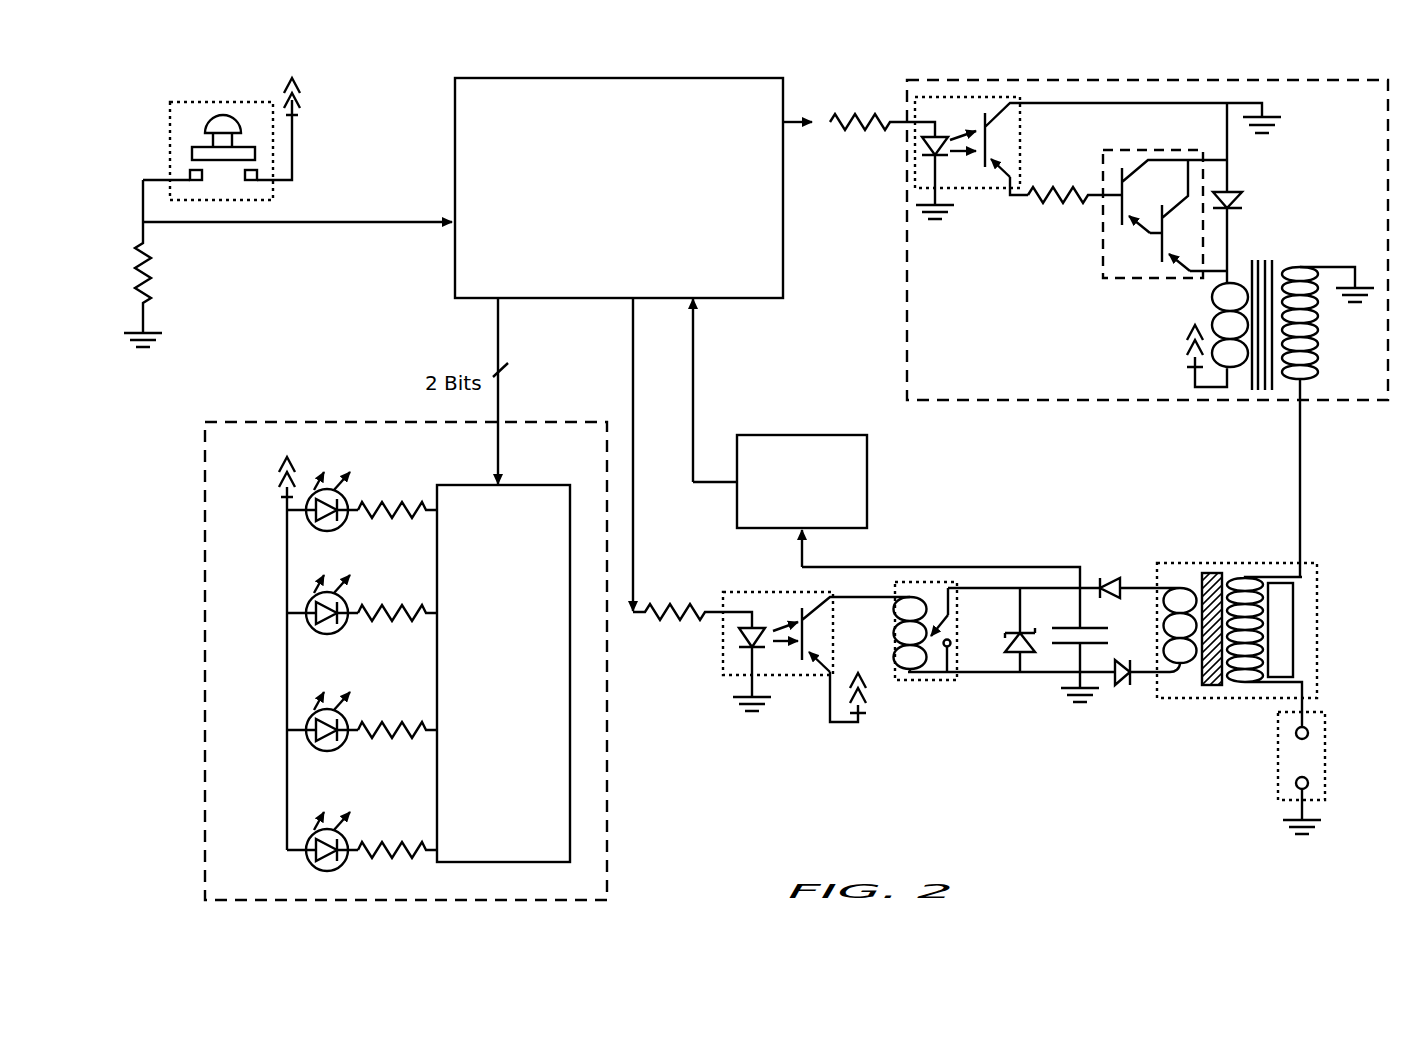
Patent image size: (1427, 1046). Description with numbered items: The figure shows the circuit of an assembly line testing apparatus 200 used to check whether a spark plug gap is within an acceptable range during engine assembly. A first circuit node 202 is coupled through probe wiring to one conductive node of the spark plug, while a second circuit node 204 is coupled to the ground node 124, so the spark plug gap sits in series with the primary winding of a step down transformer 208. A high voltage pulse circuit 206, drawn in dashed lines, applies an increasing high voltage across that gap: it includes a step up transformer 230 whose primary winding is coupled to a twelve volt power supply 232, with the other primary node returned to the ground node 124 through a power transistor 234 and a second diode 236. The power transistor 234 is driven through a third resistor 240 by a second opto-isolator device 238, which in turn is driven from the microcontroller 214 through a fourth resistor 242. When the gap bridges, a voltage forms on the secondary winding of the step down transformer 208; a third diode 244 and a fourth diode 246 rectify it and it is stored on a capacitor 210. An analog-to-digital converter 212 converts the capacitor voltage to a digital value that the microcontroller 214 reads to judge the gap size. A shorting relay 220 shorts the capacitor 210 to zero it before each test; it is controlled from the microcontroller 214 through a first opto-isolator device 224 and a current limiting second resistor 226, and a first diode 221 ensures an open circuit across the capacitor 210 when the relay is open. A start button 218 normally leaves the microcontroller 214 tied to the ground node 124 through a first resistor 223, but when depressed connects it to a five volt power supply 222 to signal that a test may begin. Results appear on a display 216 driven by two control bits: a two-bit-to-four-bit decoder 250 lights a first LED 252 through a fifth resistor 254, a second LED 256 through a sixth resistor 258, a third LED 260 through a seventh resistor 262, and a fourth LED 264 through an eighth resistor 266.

The assembly line testing apparatus 200 is at (882, 42).
The first circuit node 202 is at (1313, 731).
The second circuit node 204 is at (1313, 783).
The high voltage pulse circuit 206 is at (972, 408).
The step down transformer 208 is at (1216, 562).
The capacitor 210 is at (1061, 627).
The analog-to-digital converter 212 is at (796, 433).
The microcontroller 214 is at (452, 92).
The display 216 is at (611, 805).
The start button 218 is at (209, 96).
The shorting relay 220 is at (926, 684).
The first diode 221 is at (1004, 647).
The +5V power supply 222 is at (299, 85).
The first resistor 223 is at (161, 265).
The first opto-isolator device 224 is at (745, 588).
The second resistor 226 is at (683, 631).
The step up transformer 230 is at (1273, 256).
The +12V power supply 232 is at (1189, 331).
The power transistor 234 is at (1102, 253).
The second diode 236 is at (1241, 189).
The second opto-isolator device 238 is at (973, 194).
The third resistor 240 is at (1066, 186).
The fourth resistor 242 is at (862, 137).
The third diode 244 is at (1110, 578).
The fourth diode 246 is at (1120, 689).
The 2-bit-to-4-bit decoder 250 is at (544, 482).
The first LED 252 is at (349, 526).
The fifth resistor 254 is at (400, 497).
The second LED 256 is at (349, 629).
The sixth resistor 258 is at (400, 601).
The third LED 260 is at (350, 746).
The seventh resistor 262 is at (400, 718).
The fourth LED 264 is at (350, 866).
The eighth resistor 266 is at (400, 838).
The ground node 124 is at (166, 339).